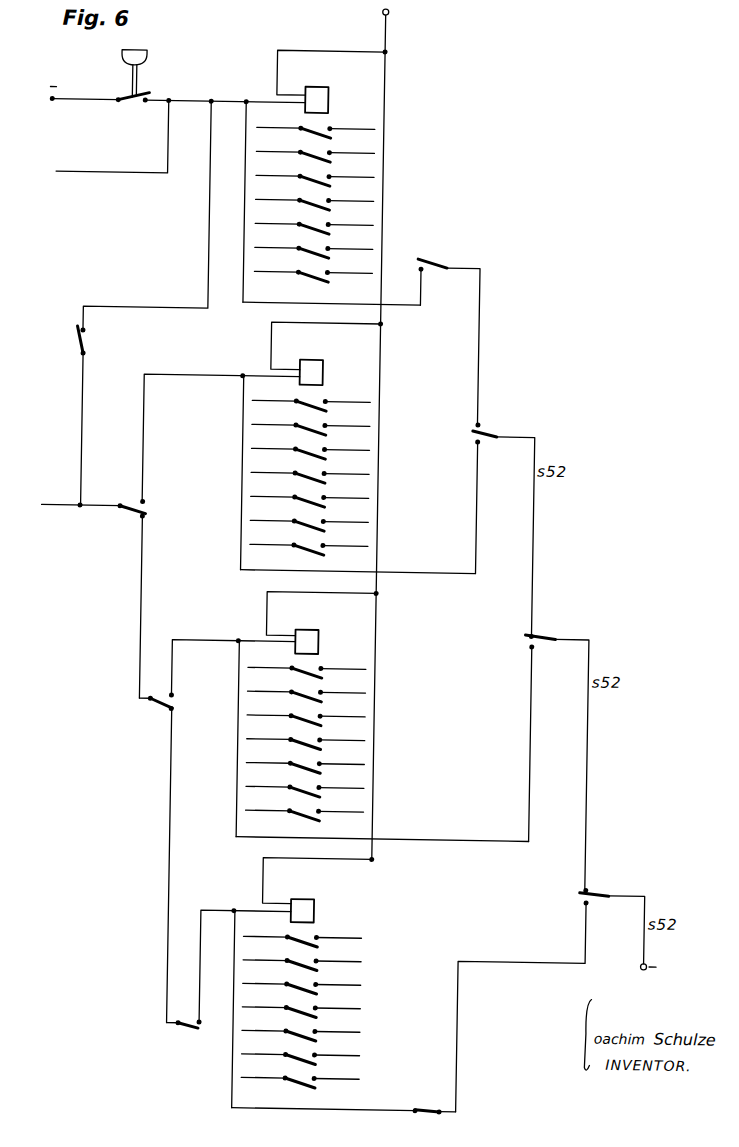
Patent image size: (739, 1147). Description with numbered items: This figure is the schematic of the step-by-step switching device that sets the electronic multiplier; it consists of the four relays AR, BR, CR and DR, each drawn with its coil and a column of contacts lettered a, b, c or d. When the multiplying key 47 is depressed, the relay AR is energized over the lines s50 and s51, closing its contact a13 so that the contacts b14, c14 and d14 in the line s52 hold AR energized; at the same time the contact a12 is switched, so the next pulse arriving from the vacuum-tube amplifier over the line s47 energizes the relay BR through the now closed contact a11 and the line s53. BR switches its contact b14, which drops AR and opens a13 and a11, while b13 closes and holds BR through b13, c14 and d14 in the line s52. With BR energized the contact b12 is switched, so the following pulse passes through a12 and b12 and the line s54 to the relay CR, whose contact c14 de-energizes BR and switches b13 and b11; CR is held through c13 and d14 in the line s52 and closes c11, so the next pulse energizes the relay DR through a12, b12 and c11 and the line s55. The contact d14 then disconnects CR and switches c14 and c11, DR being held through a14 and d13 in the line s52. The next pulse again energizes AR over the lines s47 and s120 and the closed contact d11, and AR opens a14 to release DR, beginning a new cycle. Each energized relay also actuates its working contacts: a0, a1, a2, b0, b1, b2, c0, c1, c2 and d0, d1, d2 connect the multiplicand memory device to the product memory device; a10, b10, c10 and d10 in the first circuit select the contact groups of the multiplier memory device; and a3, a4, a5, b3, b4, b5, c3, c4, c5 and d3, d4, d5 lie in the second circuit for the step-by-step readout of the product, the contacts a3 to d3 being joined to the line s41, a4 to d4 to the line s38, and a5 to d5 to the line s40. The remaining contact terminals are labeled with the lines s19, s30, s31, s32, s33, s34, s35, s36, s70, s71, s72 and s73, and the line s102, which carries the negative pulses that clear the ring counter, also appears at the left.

The multiplying key 47 is at (148, 73).
The line s50 is at (178, 95).
The line s51 is at (395, 432).
The line s52 is at (478, 347).
The line s53 is at (221, 430).
The line s54 is at (233, 660).
The line s55 is at (245, 957).
The line s102 is at (167, 142).
The line s120 is at (82, 378).
The line s47 is at (82, 496).
The relay AR is at (334, 176).
The relay BR is at (360, 446).
The relay CR is at (384, 715).
The relay DR is at (326, 983).
The relay contact a0 is at (318, 129).
The relay contact a1 is at (317, 153).
The relay contact a10 is at (317, 177).
The relay contact a2 is at (316, 201).
The relay contact a3 is at (316, 225).
The relay contact a4 is at (316, 249).
The relay contact a5 is at (315, 273).
The relay contact a11 is at (144, 504).
The relay contact a12 is at (151, 606).
The relay contact a13 is at (432, 282).
The relay contact a14 is at (434, 1104).
The relay contact b0 is at (313, 402).
The relay contact b1 is at (313, 426).
The relay contact b10 is at (312, 450).
The relay contact b2 is at (312, 474).
The relay contact b3 is at (311, 498).
The relay contact b4 is at (311, 522).
The relay contact b5 is at (311, 546).
The relay contact b11 is at (167, 696).
The relay contact b12 is at (170, 860).
The relay contact b13 is at (486, 507).
The relay contact b14 is at (502, 527).
The relay contact c0 is at (309, 669).
The relay contact c1 is at (308, 693).
The relay contact c10 is at (308, 717).
The relay contact c2 is at (307, 741).
The relay contact c3 is at (307, 765).
The relay contact c4 is at (307, 788).
The relay contact c5 is at (306, 812).
The relay contact c11 is at (194, 1025).
The relay contact c13 is at (540, 742).
The relay contact c14 is at (555, 755).
The relay contact d0 is at (304, 938).
The relay contact d1 is at (304, 962).
The relay contact d10 is at (303, 985).
The relay contact d2 is at (303, 1009).
The relay contact d3 is at (303, 1032).
The relay contact d4 is at (302, 1056).
The relay contact d5 is at (302, 1079).
The relay contact d11 is at (144, 228).
The relay contact d13 is at (532, 1006).
The relay contact d14 is at (617, 923).
The signal line s19 is at (278, 168).
The signal line s30 is at (355, 123).
The signal line s31 is at (279, 120).
The signal line s32 is at (278, 144).
The signal line s33 is at (278, 192).
The signal line s34 is at (273, 465).
The signal line s35 is at (354, 147).
The signal line s36 is at (354, 195).
The line s38 is at (353, 243).
The line s40 is at (276, 264).
The line s41 is at (277, 216).
The signal line s70 is at (354, 171).
The signal line s71 is at (349, 444).
The signal line s72 is at (345, 710).
The signal line s73 is at (341, 979).